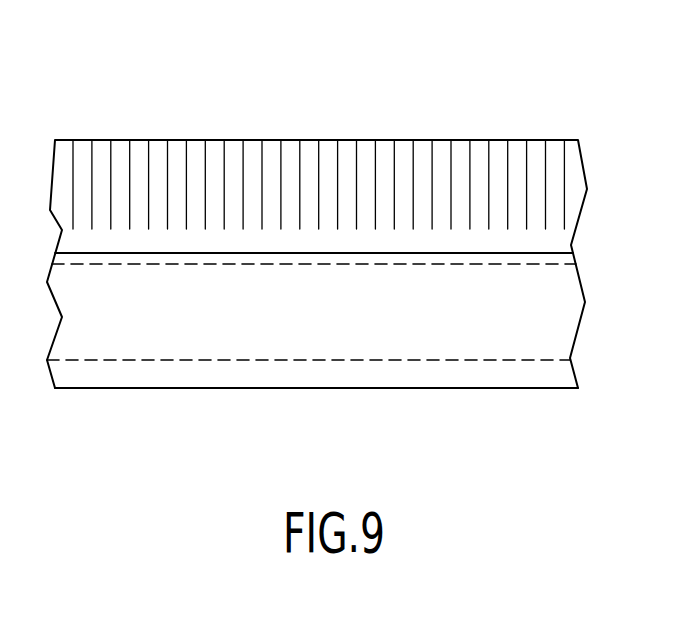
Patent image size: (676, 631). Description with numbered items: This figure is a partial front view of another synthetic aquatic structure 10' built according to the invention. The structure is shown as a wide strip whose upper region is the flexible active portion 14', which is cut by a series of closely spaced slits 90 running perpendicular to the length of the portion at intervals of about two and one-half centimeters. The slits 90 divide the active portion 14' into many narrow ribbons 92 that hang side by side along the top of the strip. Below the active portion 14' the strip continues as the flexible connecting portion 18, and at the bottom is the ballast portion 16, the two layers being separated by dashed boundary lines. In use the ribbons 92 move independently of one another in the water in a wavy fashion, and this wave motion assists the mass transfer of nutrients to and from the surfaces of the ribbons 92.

The aquatic structure 10' is at (317, 205).
The active portion 14' is at (345, 203).
The ballast portion 16 is at (287, 375).
The flexible connecting portion 18 is at (550, 328).
The slits 90 is at (208, 163).
The ribbons 92 is at (495, 172).